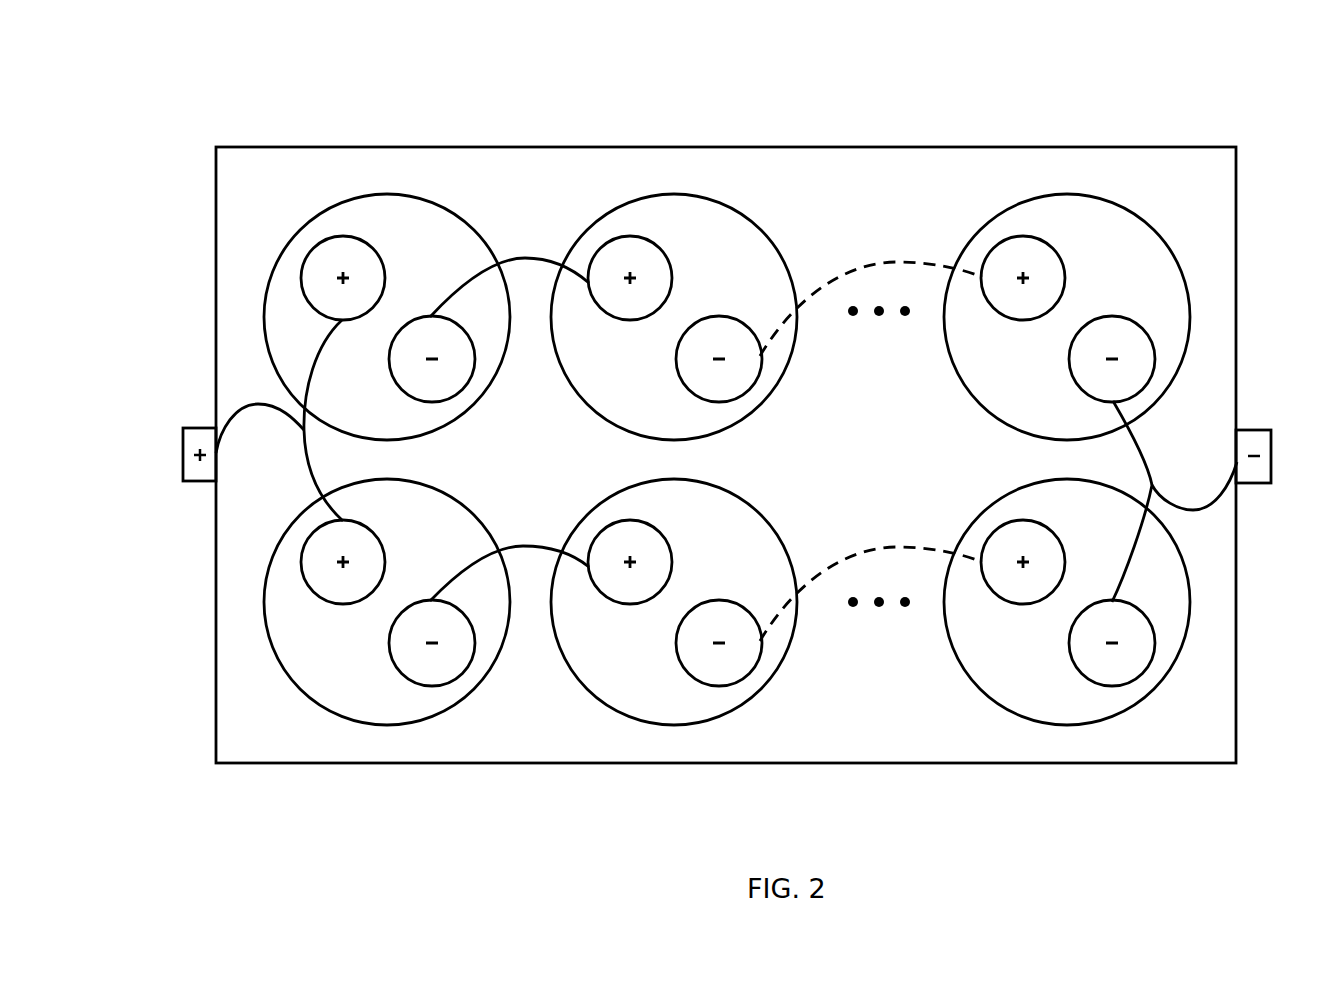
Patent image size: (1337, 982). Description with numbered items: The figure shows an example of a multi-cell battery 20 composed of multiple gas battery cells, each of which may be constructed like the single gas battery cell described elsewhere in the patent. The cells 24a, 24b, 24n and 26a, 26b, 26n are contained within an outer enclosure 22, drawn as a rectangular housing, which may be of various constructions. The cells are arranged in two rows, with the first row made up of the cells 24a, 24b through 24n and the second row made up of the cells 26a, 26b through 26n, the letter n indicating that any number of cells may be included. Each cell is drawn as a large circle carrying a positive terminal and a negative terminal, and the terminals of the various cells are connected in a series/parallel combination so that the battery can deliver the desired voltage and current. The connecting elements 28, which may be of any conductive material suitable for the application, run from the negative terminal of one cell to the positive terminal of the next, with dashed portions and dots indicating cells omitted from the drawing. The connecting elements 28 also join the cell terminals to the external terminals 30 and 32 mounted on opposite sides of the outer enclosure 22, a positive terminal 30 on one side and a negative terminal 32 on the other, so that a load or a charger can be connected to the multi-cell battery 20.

The multi-cell battery 20 is at (258, 108).
The outer enclosure 22 is at (378, 146).
The cell 24a is at (460, 212).
The cell 24b is at (758, 222).
The cell 24n is at (1152, 222).
The cell 26a is at (452, 707).
The cell 26b is at (733, 708).
The cell 26n is at (1138, 702).
The connecting element 28 is at (528, 257).
The external terminal 30 is at (190, 428).
The external terminal 32 is at (1260, 430).